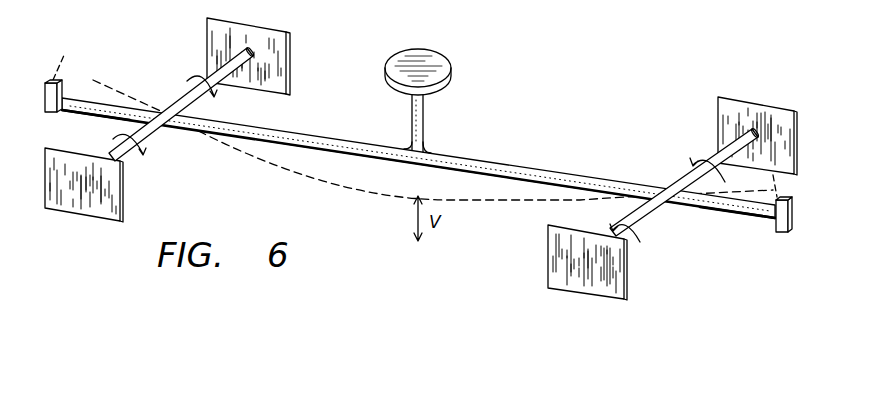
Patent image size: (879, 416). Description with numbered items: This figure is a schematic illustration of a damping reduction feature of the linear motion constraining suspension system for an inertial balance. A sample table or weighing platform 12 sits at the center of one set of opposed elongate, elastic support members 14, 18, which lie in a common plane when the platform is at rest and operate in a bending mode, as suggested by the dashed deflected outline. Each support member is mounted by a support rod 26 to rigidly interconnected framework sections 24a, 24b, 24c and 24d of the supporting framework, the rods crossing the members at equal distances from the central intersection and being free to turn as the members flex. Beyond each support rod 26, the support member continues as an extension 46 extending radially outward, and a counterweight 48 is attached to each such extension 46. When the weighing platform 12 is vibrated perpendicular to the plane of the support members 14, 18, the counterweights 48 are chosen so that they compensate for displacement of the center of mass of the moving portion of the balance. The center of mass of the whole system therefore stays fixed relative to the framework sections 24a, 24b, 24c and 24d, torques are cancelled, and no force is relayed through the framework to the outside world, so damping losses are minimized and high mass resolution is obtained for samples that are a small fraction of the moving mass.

The weighing platform 12 is at (437, 65).
The support element 14 is at (418, 148).
The support element 18 is at (323, 138).
The framework section 24a is at (745, 103).
The framework section 24b is at (595, 283).
The framework section 24c is at (290, 57).
The framework section 24d is at (97, 202).
The support rod 26 is at (178, 98).
The extension 46 is at (93, 115).
The counterweight 48 is at (46, 82).